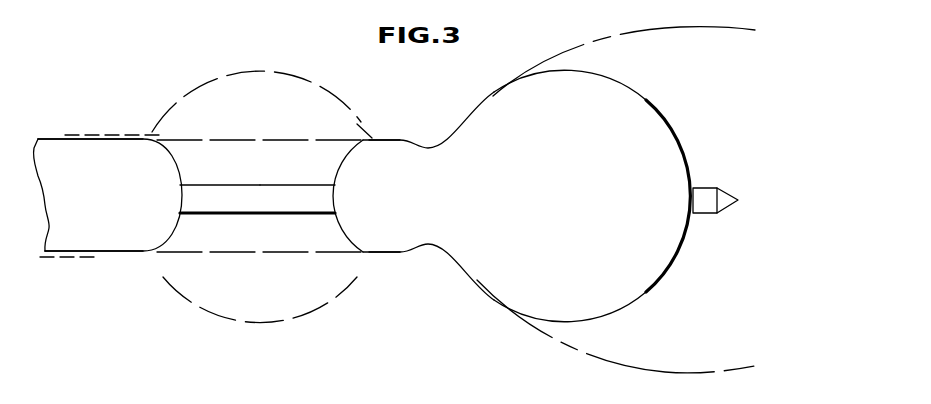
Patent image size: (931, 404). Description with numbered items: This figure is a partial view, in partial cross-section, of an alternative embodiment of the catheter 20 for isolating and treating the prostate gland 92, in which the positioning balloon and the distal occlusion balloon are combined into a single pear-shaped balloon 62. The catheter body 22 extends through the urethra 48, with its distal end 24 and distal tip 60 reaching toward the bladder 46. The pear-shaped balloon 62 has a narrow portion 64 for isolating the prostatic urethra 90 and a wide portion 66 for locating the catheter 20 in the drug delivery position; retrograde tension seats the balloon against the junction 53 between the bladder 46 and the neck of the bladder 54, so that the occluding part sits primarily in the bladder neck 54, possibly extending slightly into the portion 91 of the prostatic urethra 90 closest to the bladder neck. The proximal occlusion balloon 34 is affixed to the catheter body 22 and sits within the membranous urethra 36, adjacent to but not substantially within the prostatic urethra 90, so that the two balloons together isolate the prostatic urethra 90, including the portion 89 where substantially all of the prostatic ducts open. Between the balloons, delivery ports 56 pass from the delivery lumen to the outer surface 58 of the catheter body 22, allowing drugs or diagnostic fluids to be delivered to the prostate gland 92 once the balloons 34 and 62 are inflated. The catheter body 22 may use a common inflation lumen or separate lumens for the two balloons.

The catheter 20 is at (33, 127).
The catheter body 22 is at (211, 189).
The distal end 24 is at (703, 186).
The proximal occlusion balloon 34 is at (45, 243).
The membranous urethra 36 is at (105, 254).
The bladder 46 is at (681, 370).
The urethra 48 is at (122, 137).
The junction 53 is at (447, 144).
The neck of the bladder 54 is at (400, 256).
The delivery ports 56 is at (214, 214).
The outer surface 58 is at (298, 191).
The distal tip 60 is at (728, 208).
The pear-shaped balloon 62 is at (666, 118).
The narrow portion 64 is at (358, 141).
The wide portion 66 is at (686, 149).
The portion of the prostatic urethra 89 is at (167, 253).
The prostatic urethra 90 is at (197, 138).
The portion of the prostatic urethra closest to the bladder neck 91 is at (371, 253).
The prostate gland 92 is at (289, 75).